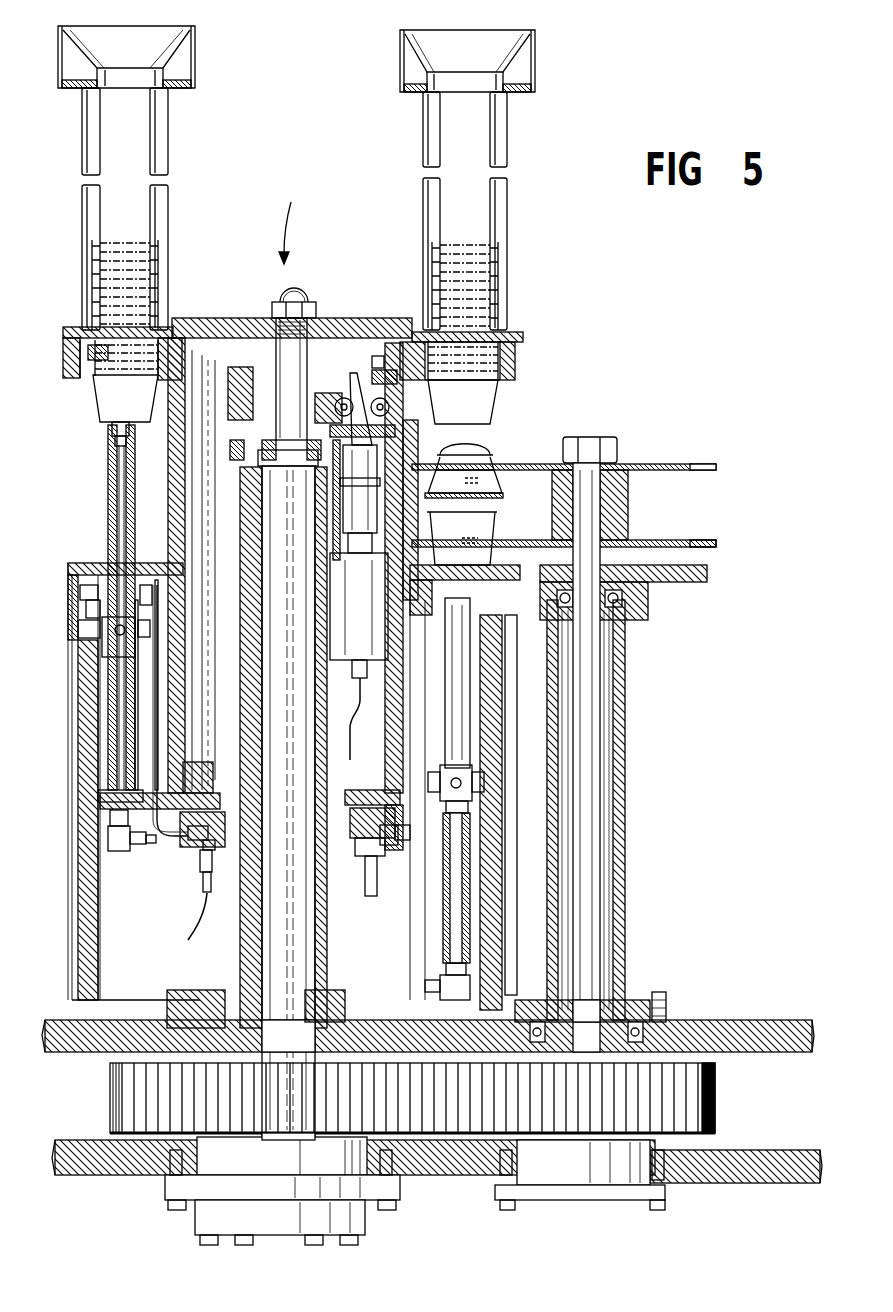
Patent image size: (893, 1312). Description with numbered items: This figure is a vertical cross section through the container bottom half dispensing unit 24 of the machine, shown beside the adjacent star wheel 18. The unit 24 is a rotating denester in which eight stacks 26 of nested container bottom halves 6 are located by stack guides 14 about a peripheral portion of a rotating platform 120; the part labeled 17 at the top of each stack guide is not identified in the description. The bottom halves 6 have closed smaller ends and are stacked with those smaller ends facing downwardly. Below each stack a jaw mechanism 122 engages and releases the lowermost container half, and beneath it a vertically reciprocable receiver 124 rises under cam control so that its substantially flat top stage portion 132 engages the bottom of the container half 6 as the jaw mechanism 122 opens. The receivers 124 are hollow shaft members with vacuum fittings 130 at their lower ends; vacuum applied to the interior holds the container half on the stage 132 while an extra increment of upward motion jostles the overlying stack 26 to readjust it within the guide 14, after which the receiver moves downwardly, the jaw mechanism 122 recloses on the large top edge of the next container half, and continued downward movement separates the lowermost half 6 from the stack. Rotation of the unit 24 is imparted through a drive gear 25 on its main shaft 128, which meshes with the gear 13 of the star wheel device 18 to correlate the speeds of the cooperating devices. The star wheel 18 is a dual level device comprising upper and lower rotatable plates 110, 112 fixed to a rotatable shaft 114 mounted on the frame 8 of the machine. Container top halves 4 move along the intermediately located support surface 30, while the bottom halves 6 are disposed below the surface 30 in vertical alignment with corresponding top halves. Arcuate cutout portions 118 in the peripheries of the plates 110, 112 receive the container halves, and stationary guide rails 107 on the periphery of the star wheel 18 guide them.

The hopper 17 is at (153, 34).
The stack guides 14 is at (100, 137).
The stacks 26 is at (126, 246).
The container bottom half supply unit 24 is at (299, 221).
The rotating platform 120 is at (335, 330).
The jaw mechanisms 122 is at (522, 371).
The container bottom half 6 is at (93, 400).
The stage portion 132 is at (112, 426).
The receivers 124 is at (108, 506).
The guide rails 107 is at (445, 450).
The container top half 4 is at (485, 470).
The support surface 30 is at (500, 497).
The star wheel 18 is at (652, 462).
The arcuate cutout portions 118 is at (708, 466).
The upper rotatable plate 110 is at (686, 471).
The lower rotatable plate 112 is at (658, 541).
The main shaft 128 is at (287, 641).
The vacuum fittings 130 is at (120, 851).
The rotatable shaft 114 is at (588, 850).
The frame 8 is at (738, 1030).
The drive gear 25 is at (125, 1105).
The gear 13 is at (718, 1114).